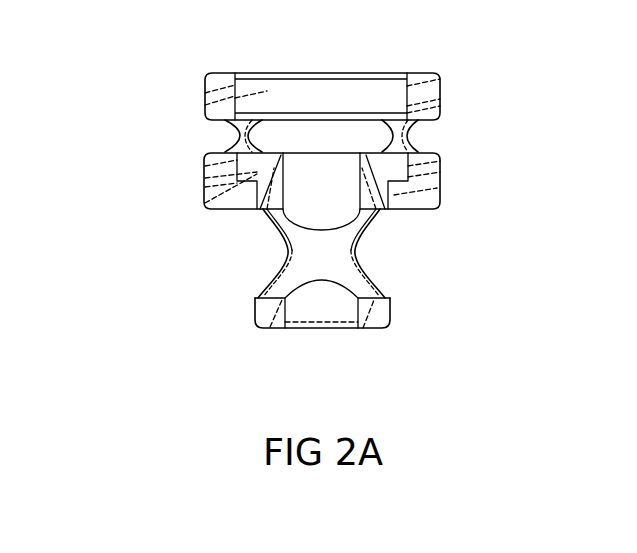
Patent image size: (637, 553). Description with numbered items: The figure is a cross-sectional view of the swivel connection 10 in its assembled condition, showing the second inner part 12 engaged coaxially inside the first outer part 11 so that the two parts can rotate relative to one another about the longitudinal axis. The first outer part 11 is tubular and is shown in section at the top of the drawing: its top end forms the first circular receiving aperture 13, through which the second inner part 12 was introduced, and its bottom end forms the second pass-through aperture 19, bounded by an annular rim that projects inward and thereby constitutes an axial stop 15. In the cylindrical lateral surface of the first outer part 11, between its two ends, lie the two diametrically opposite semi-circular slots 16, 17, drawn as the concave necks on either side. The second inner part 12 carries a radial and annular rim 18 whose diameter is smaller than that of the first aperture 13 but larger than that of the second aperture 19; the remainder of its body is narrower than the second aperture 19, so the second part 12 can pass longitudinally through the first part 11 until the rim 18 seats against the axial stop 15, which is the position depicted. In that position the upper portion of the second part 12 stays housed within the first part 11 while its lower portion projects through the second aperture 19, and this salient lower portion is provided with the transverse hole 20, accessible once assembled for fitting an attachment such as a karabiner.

The swivel connection 10 is at (143, 363).
The first outer part 11 is at (423, 97).
The second inner part 12 is at (437, 193).
The first circular receiving aperture 13 is at (267, 89).
The axial stop 15 is at (257, 183).
The semi-circular slot 16 is at (222, 137).
The semi-circular slot 17 is at (420, 137).
The radial annular rim 18 is at (238, 168).
The second pass-through aperture 19 is at (240, 207).
The transverse hole 20 is at (360, 253).